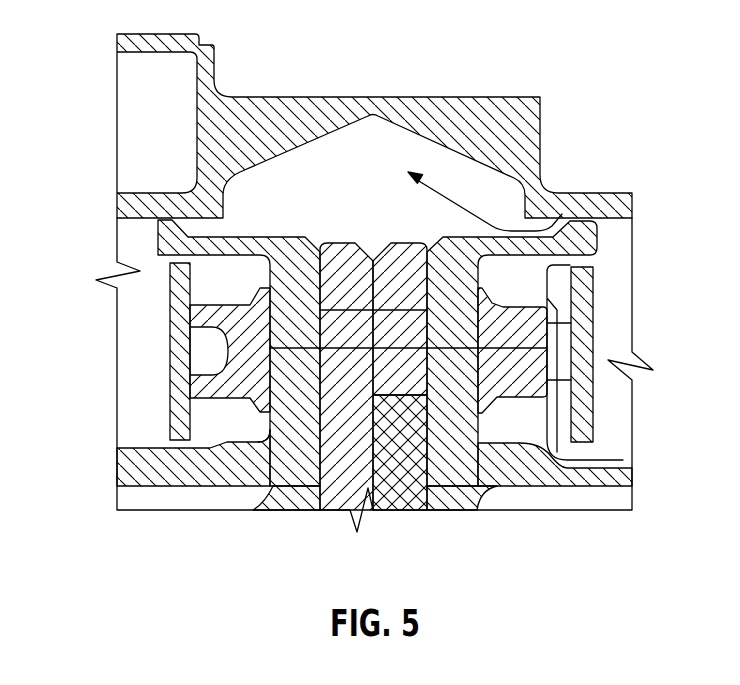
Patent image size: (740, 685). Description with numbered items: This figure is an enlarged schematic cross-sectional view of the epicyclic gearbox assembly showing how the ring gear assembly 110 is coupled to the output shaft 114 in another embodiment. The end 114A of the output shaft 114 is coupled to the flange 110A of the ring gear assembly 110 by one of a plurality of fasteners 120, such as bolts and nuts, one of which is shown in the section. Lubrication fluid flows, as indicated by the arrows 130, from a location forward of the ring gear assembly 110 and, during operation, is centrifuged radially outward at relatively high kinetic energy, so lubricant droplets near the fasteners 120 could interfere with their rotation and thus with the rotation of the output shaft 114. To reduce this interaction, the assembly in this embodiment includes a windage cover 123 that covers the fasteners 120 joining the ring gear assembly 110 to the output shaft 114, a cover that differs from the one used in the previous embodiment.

The ring gear assembly 110 is at (408, 411).
The flange 110A is at (375, 400).
The output shaft 114 is at (289, 258).
The end 114A is at (125, 462).
The fasteners 120 is at (505, 320).
The windage cover 123 is at (178, 318).
The arrows 130 is at (435, 191).